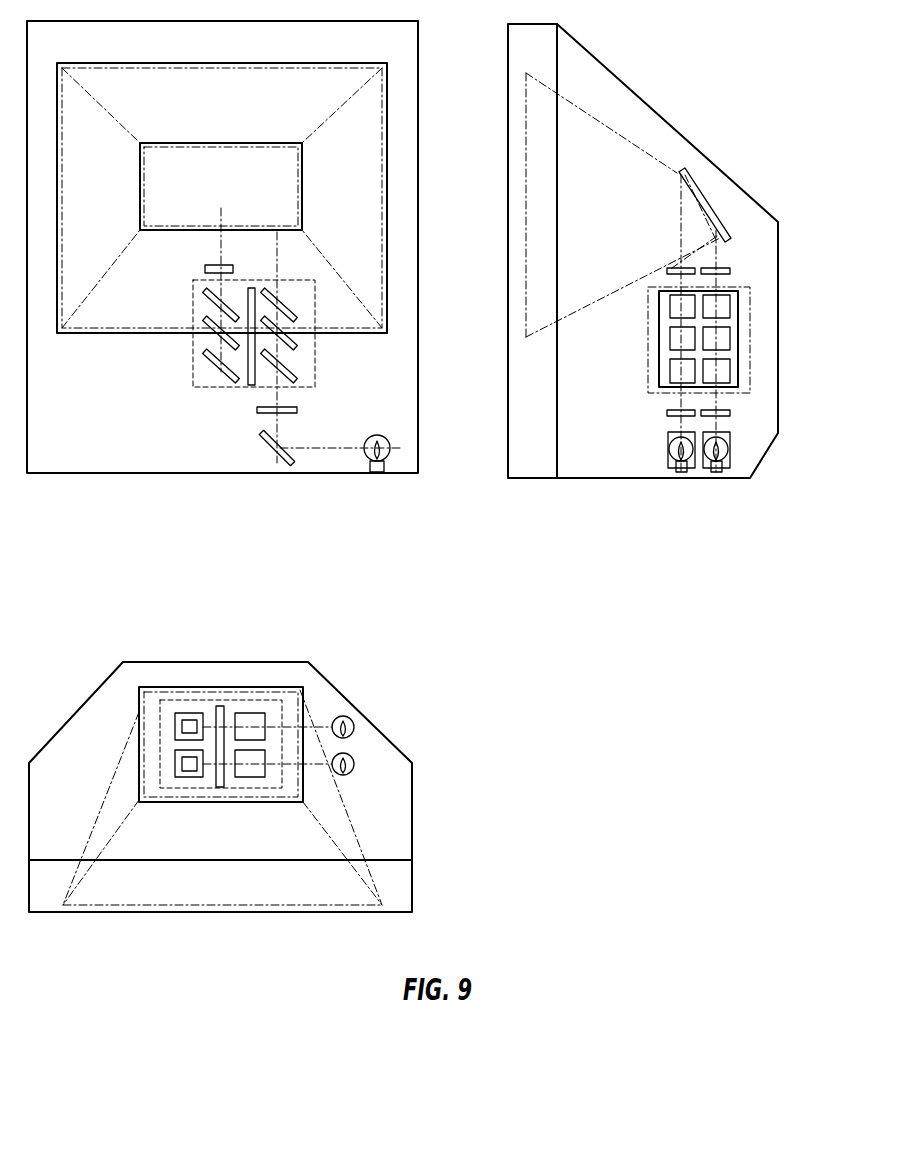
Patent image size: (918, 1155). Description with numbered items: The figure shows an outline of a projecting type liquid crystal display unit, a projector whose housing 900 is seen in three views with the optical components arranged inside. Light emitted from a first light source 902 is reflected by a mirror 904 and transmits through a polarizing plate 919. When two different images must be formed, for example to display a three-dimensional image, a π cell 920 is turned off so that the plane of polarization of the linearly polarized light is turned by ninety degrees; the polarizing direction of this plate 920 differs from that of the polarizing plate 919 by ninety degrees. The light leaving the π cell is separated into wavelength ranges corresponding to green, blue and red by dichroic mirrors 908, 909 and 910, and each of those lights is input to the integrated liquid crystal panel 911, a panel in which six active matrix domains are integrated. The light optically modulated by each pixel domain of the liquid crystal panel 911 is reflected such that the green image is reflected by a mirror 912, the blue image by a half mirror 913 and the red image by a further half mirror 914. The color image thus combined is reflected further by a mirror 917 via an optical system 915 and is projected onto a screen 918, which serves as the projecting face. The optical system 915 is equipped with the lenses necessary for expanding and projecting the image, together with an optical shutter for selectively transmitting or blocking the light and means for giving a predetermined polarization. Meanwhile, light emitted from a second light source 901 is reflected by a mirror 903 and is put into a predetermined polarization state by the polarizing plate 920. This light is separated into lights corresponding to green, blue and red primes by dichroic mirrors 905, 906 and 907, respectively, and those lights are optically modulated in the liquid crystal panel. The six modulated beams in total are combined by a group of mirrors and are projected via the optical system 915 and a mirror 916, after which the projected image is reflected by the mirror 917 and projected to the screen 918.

The housing 900 is at (412, 21).
The light source 901 is at (716, 472).
The first light source 902 is at (378, 472).
The mirror 903 is at (730, 448).
The mirror 904 is at (281, 461).
The dichroic mirror 905 is at (730, 370).
The dichroic mirror 906 is at (730, 338).
The dichroic mirror 907 is at (730, 305).
The dichroic mirror 908 is at (300, 372).
The dichroic mirror 909 is at (300, 340).
The dichroic mirror 910 is at (280, 297).
The integrated liquid crystal panel 911 is at (252, 386).
The mirror 912 is at (208, 360).
The half mirror 913 is at (210, 328).
The mirror 914 is at (207, 296).
The optical system 915 is at (205, 269).
The mirror 916 is at (730, 271).
The mirror 917 is at (695, 182).
The screen 918 is at (526, 273).
The polarizing plate 919 is at (298, 411).
The π cell 920 is at (730, 413).